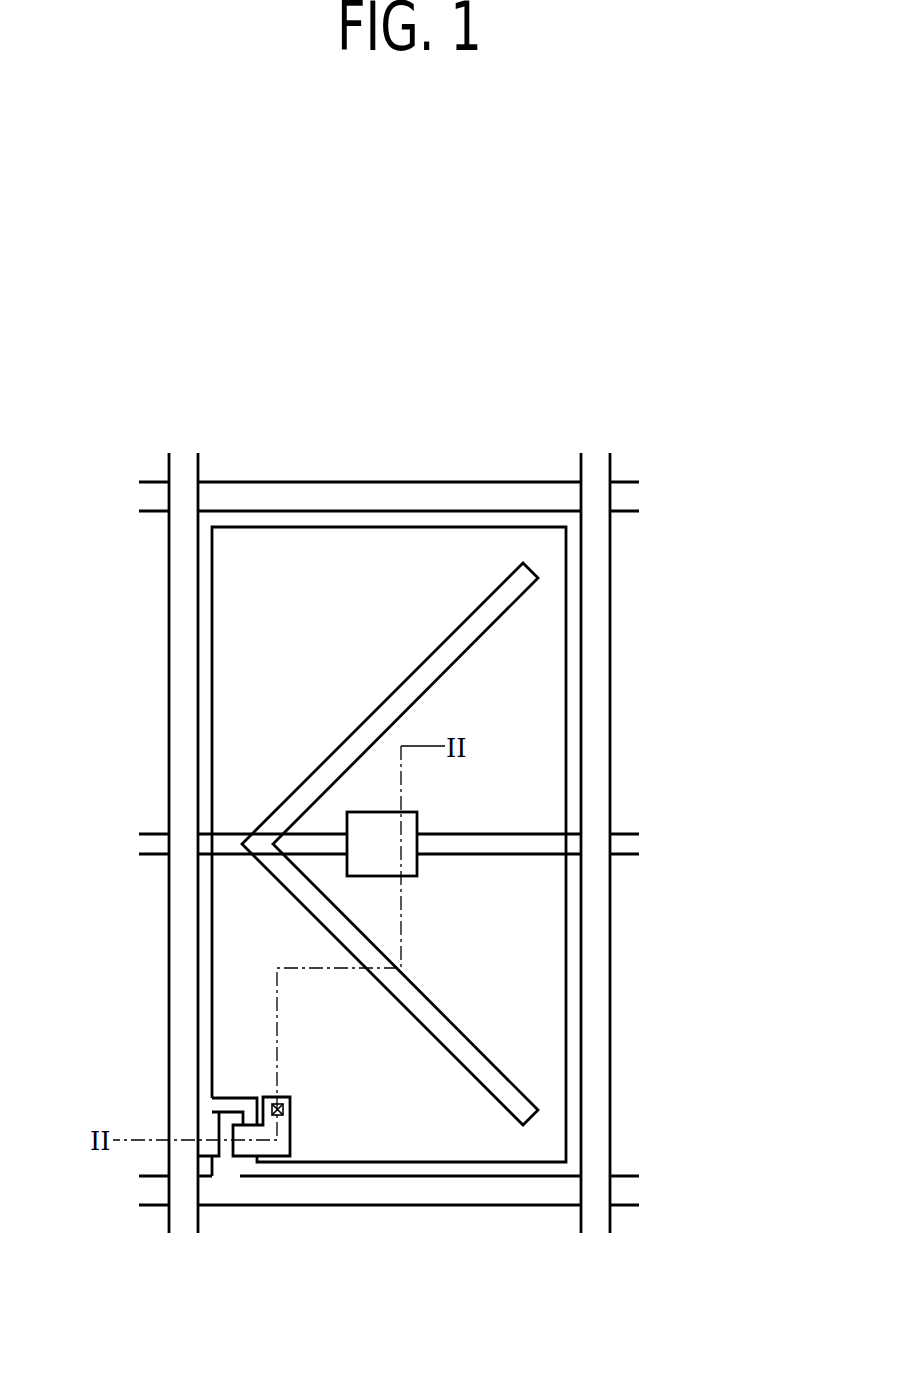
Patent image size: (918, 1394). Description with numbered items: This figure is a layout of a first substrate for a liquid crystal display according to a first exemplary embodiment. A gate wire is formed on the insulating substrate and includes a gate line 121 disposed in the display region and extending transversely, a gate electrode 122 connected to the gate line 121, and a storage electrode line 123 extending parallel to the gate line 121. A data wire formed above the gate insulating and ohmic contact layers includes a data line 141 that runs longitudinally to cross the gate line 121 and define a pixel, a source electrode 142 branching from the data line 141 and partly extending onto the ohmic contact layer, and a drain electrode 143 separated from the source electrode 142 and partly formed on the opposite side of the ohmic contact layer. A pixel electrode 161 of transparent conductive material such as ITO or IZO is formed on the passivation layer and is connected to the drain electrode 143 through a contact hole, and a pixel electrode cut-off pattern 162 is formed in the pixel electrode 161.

The gate line 121 is at (475, 1200).
The gate electrode 122 is at (210, 1112).
The storage electrode line 123 is at (623, 855).
The data line 141 is at (606, 747).
The source electrode 142 is at (221, 1136).
The drain electrode 143 is at (277, 1150).
The pixel electrode 161 is at (213, 692).
The pixel electrode cut-off pattern 162 is at (513, 1090).